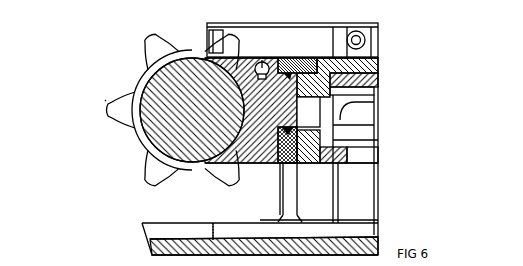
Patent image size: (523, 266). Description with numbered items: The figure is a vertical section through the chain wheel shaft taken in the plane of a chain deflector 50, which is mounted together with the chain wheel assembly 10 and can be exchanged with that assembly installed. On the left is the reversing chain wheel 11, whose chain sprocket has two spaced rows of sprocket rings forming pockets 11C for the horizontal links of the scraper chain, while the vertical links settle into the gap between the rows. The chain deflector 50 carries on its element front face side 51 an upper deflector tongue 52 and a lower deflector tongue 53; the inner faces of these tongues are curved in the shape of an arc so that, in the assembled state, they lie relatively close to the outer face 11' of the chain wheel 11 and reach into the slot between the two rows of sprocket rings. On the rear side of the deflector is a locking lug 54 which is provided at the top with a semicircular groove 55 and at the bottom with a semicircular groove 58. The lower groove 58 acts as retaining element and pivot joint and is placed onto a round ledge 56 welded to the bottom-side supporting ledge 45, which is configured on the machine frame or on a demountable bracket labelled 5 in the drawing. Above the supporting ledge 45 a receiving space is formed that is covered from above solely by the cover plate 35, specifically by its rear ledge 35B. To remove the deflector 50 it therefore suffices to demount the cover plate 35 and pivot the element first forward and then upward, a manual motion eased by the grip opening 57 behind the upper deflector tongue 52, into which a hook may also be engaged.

The chain wheel assembly 10 is at (99, 39).
The reversing chain wheel 11 is at (179, 102).
The pockets 11C is at (140, 53).
The outer face of the chain wheel 11' is at (145, 167).
The upper deflector tongue 52 is at (225, 30).
The grip opening 57 is at (262, 62).
The cover plate 35 is at (291, 50).
The rear ledge of the cover plate 35B is at (308, 58).
The housing 5 is at (370, 77).
The semicircular groove 58 is at (296, 103).
The locking lug 54 is at (294, 117).
The semicircular groove 55 is at (324, 138).
The round ledge 56 is at (301, 160).
The supporting ledge 45 is at (282, 164).
The chain deflector 50 is at (258, 163).
The element front face side 51 is at (218, 163).
The lower deflector tongue 53 is at (237, 163).